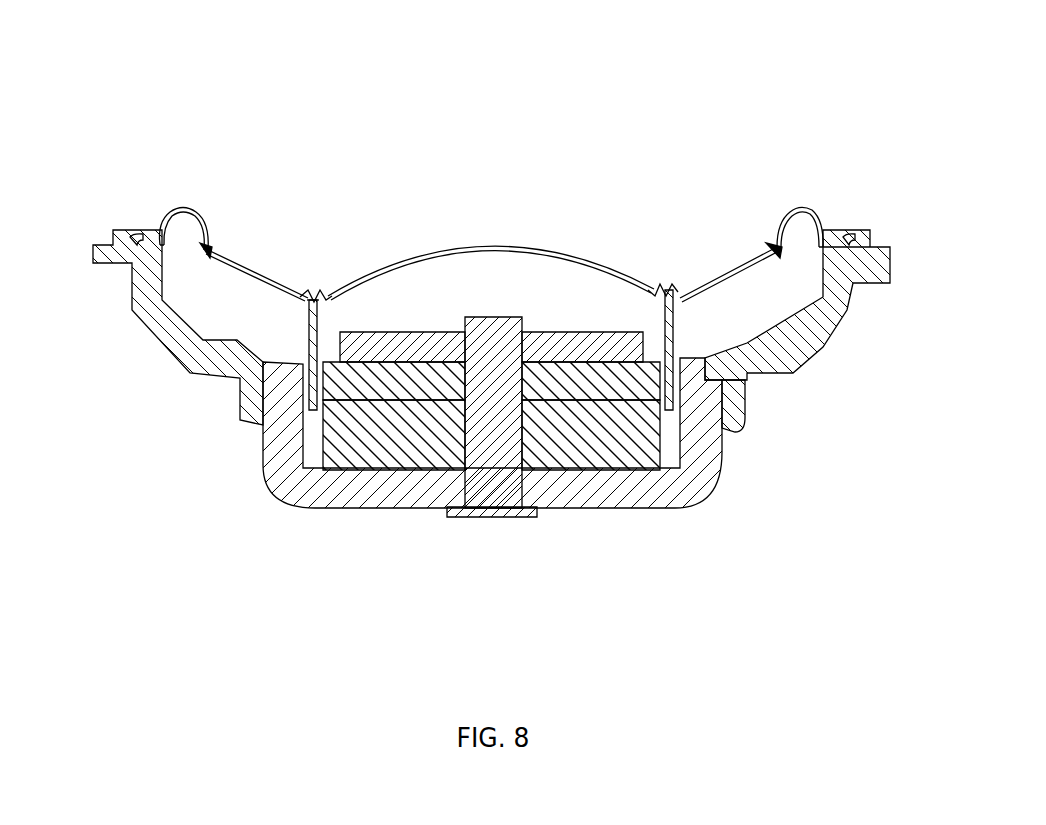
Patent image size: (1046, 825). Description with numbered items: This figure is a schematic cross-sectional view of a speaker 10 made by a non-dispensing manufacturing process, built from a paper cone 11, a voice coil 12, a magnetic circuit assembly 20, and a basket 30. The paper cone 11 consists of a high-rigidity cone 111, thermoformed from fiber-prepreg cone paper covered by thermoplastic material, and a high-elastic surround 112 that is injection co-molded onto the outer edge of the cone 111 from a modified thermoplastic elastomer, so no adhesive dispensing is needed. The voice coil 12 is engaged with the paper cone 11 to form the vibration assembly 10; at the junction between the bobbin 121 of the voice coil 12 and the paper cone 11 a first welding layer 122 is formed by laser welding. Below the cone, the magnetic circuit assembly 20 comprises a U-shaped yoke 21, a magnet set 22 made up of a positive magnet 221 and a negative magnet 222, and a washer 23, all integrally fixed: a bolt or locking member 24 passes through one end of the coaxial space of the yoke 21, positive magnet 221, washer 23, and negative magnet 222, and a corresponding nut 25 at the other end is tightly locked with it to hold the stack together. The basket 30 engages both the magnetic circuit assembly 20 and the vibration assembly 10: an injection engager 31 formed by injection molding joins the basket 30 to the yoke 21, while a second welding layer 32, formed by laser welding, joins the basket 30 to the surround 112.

The speaker 10 is at (463, 222).
The paper cone 11 is at (737, 270).
The cone 111 is at (735, 253).
The surround 112 is at (815, 215).
The voice coil 12 is at (677, 370).
The bobbin 121 is at (312, 316).
The first welding layer 122 is at (316, 298).
The magnetic circuit assembly 20 is at (382, 346).
The yoke 21 is at (307, 483).
The magnet set 22 is at (365, 417).
The positive magnet 221 is at (357, 353).
The negative magnet 222 is at (347, 437).
The washer 23 is at (343, 390).
The bolt/locking member 24 is at (477, 515).
The nut 25 is at (532, 327).
The basket 30 is at (160, 316).
The injection engager 31 is at (723, 407).
The second welding layer 32 is at (156, 243).